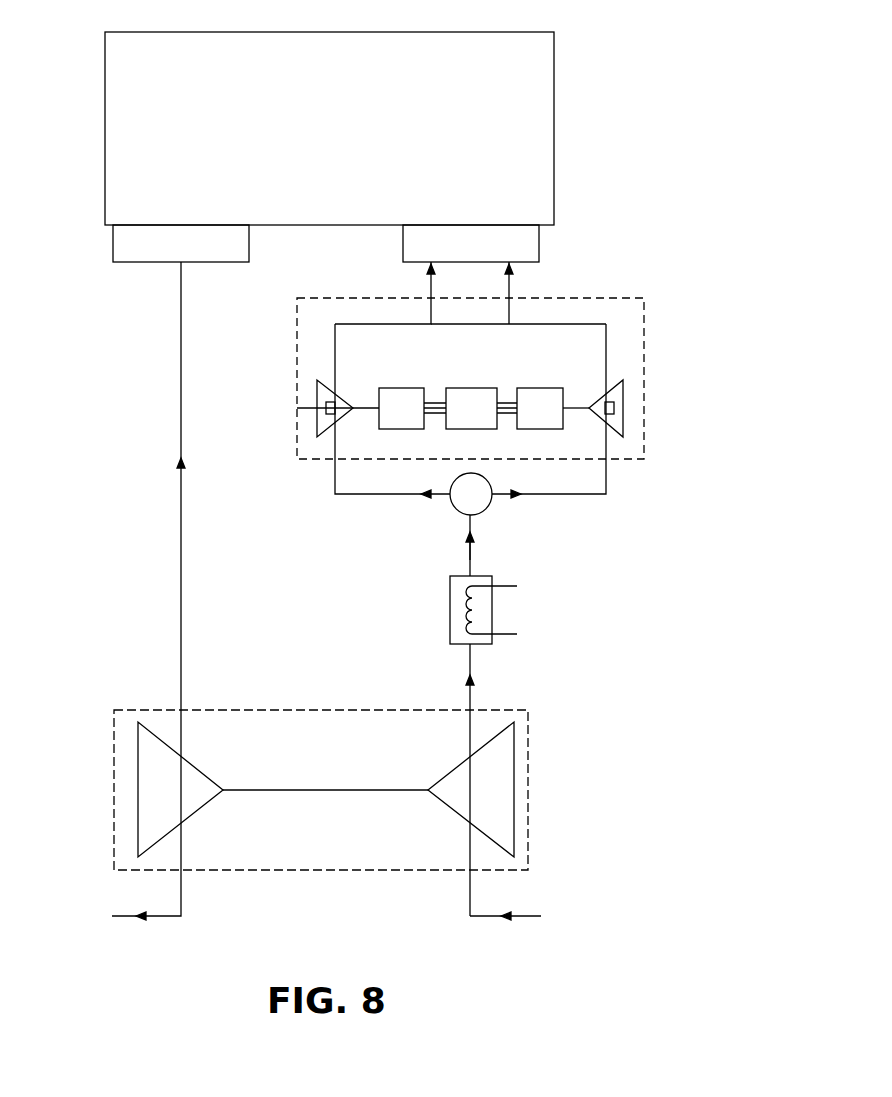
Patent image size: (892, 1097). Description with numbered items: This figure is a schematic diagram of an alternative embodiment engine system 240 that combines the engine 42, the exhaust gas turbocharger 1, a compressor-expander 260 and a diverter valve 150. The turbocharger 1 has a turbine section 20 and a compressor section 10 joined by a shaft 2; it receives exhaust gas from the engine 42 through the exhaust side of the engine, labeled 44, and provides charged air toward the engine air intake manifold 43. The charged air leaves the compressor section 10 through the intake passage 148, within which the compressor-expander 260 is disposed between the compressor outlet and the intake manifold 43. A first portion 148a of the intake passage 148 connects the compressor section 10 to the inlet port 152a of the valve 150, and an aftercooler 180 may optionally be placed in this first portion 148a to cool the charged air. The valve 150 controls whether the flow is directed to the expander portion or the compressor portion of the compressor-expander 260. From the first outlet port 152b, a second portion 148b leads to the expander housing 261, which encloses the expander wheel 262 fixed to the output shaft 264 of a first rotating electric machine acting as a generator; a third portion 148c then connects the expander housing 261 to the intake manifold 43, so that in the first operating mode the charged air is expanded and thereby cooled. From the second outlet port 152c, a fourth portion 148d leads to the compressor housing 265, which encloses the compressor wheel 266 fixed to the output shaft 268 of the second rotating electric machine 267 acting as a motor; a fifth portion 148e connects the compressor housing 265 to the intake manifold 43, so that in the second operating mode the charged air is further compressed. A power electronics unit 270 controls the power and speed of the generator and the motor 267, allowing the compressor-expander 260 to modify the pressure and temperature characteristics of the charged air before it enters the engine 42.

The exhaust gas turbocharger 1 is at (114, 720).
The shaft 2 is at (323, 790).
The compressor section 10 is at (442, 794).
The turbine section 20 is at (190, 777).
The engine 42 is at (534, 57).
The air intake manifold 43 is at (527, 247).
The exhaust manifold 44 is at (128, 243).
The intake passage 148 is at (468, 554).
The first portion of the intake passage 148a is at (473, 528).
The second portion of the intake passage 148b is at (336, 504).
The third portion of the intake passage 148c is at (351, 324).
The fourth portion of the intake passage 148d is at (606, 470).
The fifth portion of the intake passage 148e is at (560, 324).
The diverter valve 150 is at (483, 503).
The inlet port 152a is at (474, 518).
The first outlet port 152b is at (451, 497).
The second outlet port 152c is at (487, 481).
The aftercooler 180 is at (450, 608).
The engine system 240 is at (672, 190).
The compressor-expander 260 is at (644, 320).
The expander housing 261 is at (310, 407).
The expander wheel 262 is at (333, 407).
The output shaft 264 is at (365, 410).
The compressor housing 265 is at (617, 397).
The compressor wheel 266 is at (616, 408).
The second rotating electric machine 267 is at (540, 388).
The output shaft 268 is at (402, 388).
The power electronics unit 270 is at (470, 388).